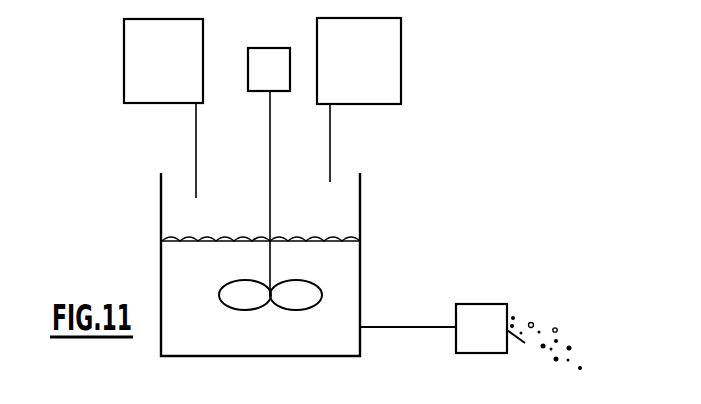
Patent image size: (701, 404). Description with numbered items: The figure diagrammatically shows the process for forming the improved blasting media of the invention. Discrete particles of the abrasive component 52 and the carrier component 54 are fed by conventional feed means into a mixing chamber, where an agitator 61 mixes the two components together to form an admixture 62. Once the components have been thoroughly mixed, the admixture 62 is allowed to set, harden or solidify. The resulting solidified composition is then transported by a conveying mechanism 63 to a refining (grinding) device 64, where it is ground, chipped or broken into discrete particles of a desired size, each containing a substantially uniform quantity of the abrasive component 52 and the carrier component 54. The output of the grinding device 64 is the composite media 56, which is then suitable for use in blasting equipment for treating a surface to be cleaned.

The abrasive component 52 is at (181, 75).
The carrier component 54 is at (347, 73).
The composite media 56 is at (583, 344).
The agitator 61 is at (253, 84).
The admixture 62 is at (288, 344).
The conveying mechanism 63 is at (392, 328).
The refining (grinding) device 64 is at (467, 341).